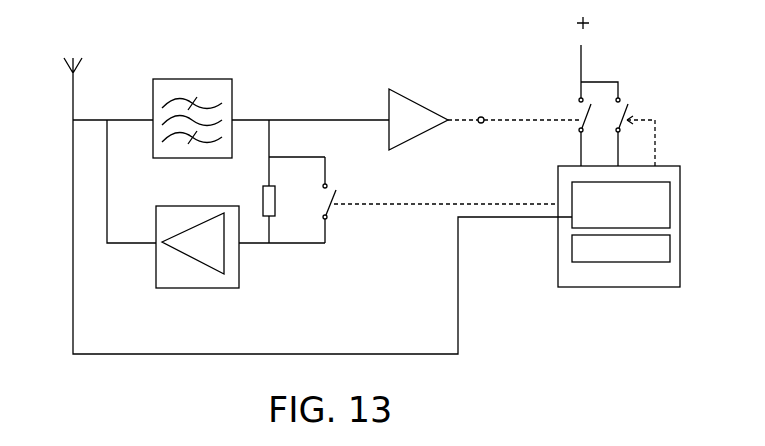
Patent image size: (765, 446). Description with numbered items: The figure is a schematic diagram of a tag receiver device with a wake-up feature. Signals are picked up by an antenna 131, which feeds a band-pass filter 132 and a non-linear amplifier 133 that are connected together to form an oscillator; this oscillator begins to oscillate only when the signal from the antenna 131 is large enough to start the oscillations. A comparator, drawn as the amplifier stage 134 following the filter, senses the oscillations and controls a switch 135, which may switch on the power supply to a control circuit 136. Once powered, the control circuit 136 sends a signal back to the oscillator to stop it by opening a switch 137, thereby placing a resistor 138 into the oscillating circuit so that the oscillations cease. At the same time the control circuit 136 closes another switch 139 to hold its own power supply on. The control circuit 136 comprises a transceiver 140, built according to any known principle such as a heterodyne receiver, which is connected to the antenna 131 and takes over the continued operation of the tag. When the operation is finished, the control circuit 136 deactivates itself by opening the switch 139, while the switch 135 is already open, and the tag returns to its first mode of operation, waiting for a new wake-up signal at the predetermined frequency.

The antenna 131 is at (73, 89).
The band-pass filter 132 is at (166, 80).
The non-linear amplifier 133 is at (207, 288).
The amplifier 134 is at (415, 100).
The switch 135 is at (577, 119).
The control circuit 136 is at (682, 169).
The switch 137 is at (337, 207).
The resistor 138 is at (262, 203).
The switch 139 is at (625, 112).
The transceiver 140 is at (670, 212).